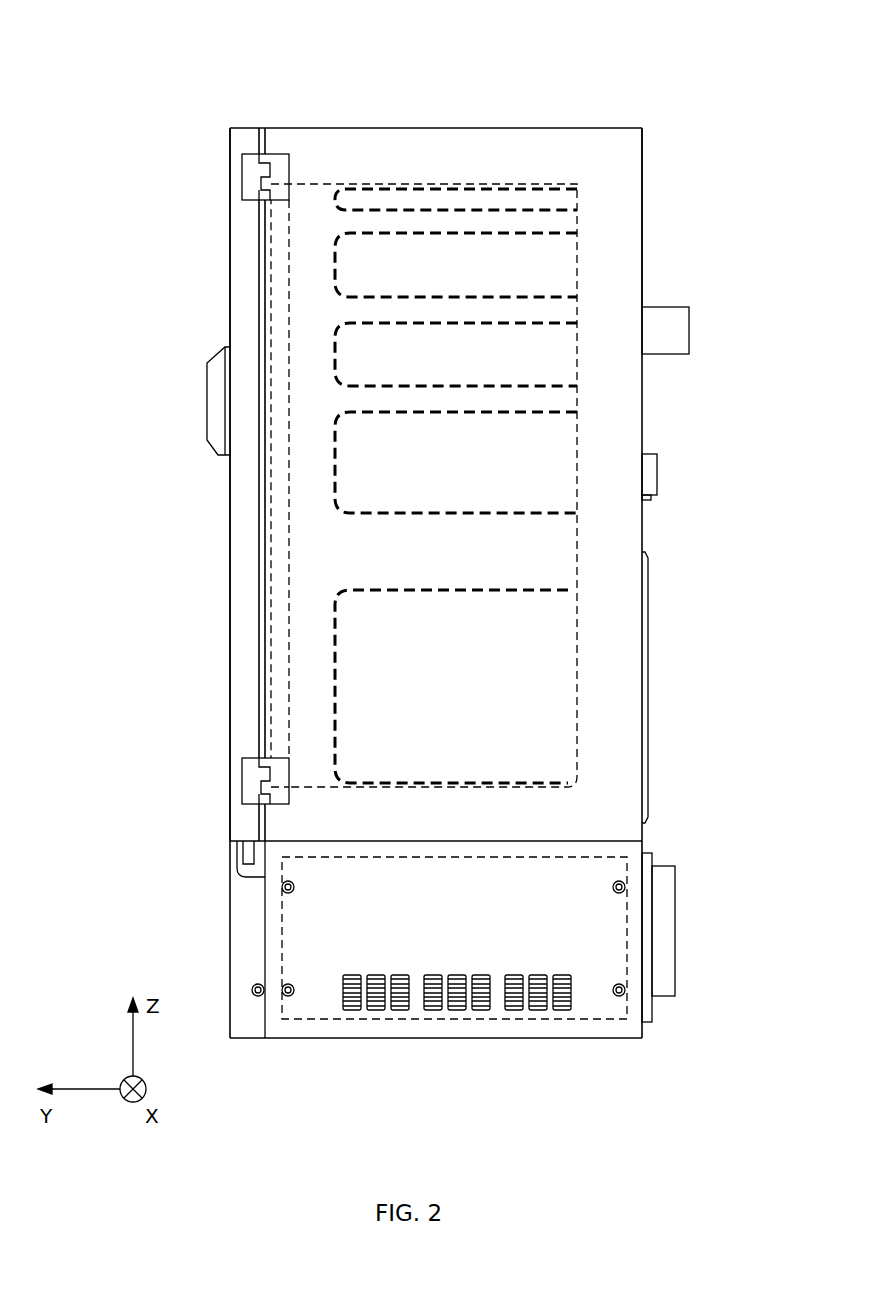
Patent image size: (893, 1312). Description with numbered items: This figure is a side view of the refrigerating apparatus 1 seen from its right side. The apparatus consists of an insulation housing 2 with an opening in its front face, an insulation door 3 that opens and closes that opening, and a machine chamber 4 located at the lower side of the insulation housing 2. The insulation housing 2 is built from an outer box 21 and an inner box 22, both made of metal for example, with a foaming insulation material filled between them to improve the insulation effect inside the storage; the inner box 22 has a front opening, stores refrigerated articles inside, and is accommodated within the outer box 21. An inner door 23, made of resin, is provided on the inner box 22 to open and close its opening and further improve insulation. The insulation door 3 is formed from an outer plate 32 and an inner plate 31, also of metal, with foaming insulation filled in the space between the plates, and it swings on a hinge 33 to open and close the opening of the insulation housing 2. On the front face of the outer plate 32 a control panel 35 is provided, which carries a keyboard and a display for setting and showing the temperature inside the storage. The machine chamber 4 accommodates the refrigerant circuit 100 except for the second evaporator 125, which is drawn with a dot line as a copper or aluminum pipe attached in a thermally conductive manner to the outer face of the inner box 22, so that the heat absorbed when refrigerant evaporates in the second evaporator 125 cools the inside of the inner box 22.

The refrigerating apparatus 1 is at (668, 72).
The insulation housing 2 is at (690, 770).
The insulation door 3 is at (212, 148).
The machine chamber 4 is at (230, 940).
The outer box 21 is at (642, 247).
The inner box 22 is at (577, 573).
The inner door 23 is at (291, 262).
The inner plate 31 is at (258, 602).
The outer plate 32 is at (230, 512).
The hinge 33 is at (258, 155).
The control panel 35 is at (207, 402).
The refrigerant circuit 100 is at (627, 933).
The second evaporator 125 is at (523, 208).